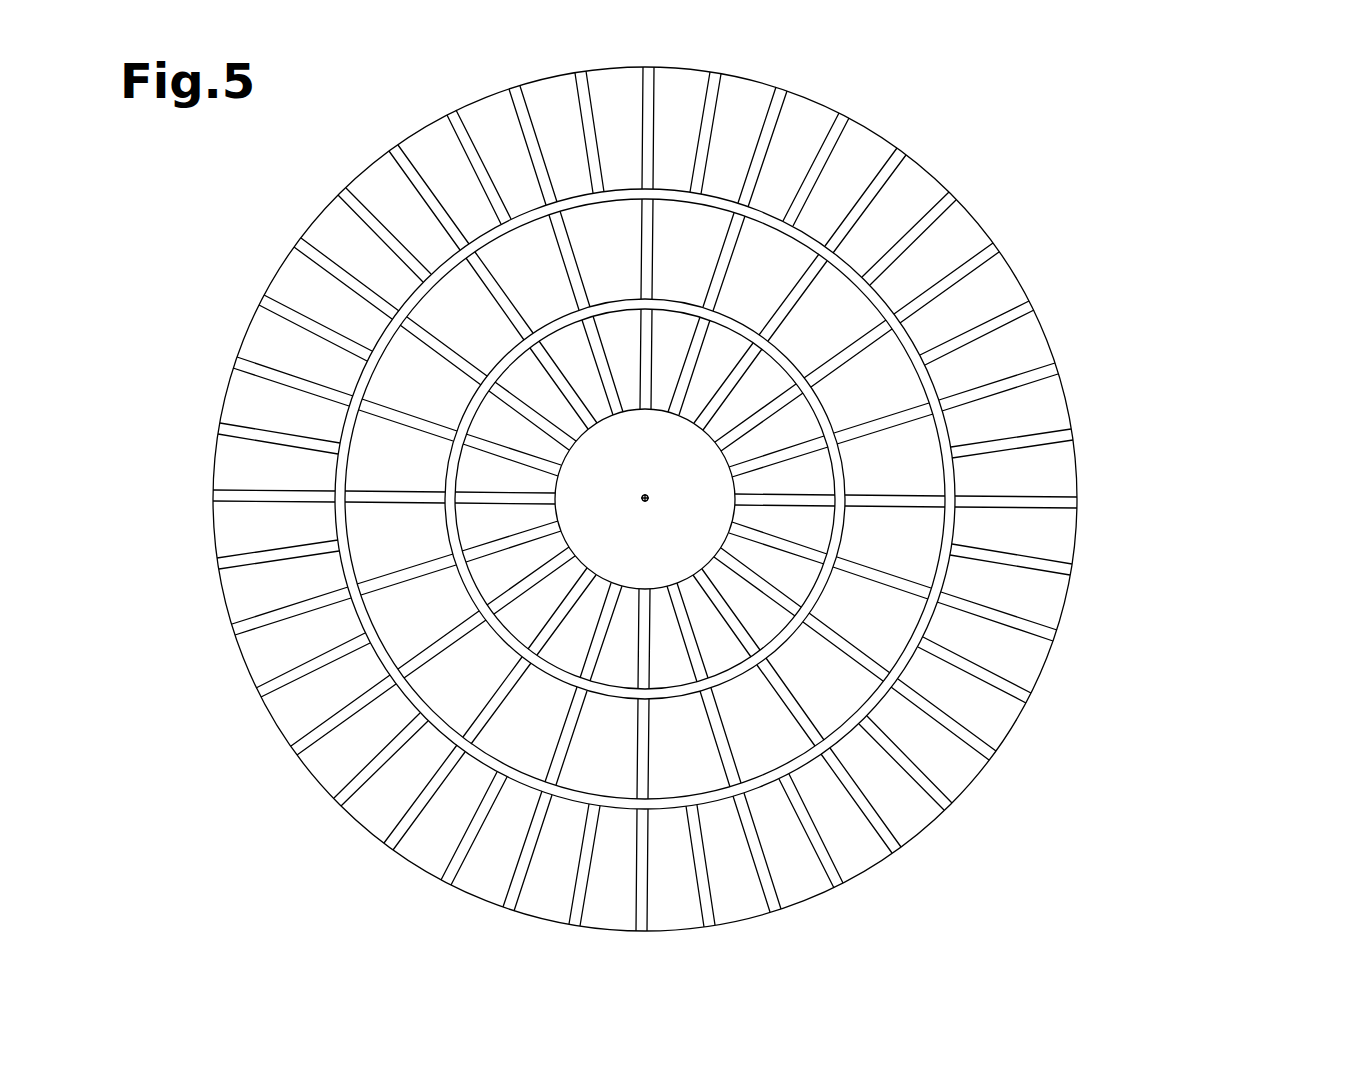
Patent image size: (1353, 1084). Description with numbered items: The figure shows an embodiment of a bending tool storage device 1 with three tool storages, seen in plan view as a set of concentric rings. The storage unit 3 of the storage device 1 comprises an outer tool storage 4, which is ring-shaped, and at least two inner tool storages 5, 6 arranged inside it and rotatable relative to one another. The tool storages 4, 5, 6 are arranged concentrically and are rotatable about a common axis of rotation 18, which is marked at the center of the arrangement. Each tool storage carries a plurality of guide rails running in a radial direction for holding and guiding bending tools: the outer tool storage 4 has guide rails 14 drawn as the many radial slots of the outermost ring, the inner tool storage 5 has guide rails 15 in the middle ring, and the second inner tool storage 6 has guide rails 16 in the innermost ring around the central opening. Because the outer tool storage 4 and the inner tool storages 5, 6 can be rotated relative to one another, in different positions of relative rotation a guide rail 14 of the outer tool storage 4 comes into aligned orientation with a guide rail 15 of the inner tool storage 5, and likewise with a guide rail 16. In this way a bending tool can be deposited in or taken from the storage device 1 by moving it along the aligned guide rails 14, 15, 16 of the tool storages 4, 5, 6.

The bending tool storage device 1 is at (1172, 213).
The storage unit 3 is at (240, 753).
The outer tool storage 4 is at (225, 393).
The inner tool storage 5 is at (847, 263).
The inner tool storage 6 is at (788, 363).
The guide rails 14 is at (1013, 612).
The guide rails 15 is at (885, 572).
The guide rails 16 is at (780, 537).
The axis of rotation 18 is at (645, 498).